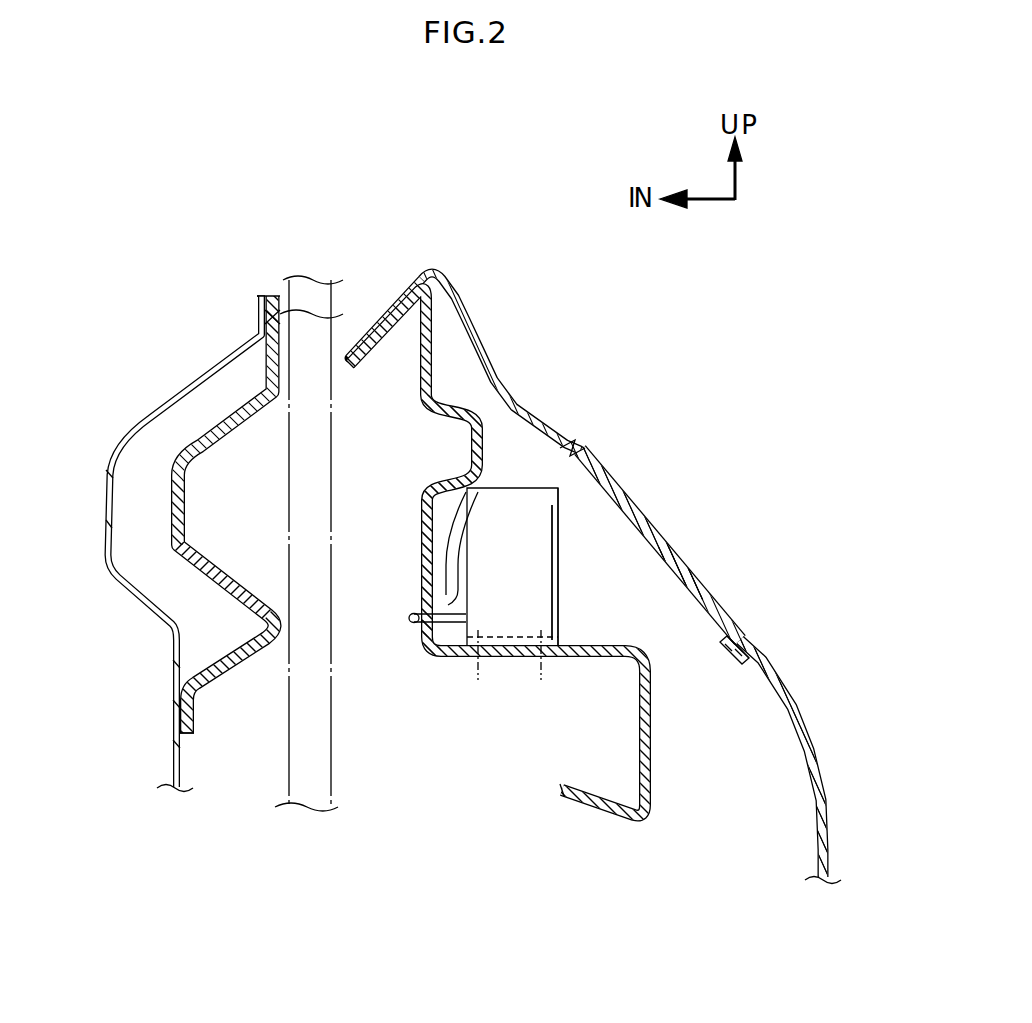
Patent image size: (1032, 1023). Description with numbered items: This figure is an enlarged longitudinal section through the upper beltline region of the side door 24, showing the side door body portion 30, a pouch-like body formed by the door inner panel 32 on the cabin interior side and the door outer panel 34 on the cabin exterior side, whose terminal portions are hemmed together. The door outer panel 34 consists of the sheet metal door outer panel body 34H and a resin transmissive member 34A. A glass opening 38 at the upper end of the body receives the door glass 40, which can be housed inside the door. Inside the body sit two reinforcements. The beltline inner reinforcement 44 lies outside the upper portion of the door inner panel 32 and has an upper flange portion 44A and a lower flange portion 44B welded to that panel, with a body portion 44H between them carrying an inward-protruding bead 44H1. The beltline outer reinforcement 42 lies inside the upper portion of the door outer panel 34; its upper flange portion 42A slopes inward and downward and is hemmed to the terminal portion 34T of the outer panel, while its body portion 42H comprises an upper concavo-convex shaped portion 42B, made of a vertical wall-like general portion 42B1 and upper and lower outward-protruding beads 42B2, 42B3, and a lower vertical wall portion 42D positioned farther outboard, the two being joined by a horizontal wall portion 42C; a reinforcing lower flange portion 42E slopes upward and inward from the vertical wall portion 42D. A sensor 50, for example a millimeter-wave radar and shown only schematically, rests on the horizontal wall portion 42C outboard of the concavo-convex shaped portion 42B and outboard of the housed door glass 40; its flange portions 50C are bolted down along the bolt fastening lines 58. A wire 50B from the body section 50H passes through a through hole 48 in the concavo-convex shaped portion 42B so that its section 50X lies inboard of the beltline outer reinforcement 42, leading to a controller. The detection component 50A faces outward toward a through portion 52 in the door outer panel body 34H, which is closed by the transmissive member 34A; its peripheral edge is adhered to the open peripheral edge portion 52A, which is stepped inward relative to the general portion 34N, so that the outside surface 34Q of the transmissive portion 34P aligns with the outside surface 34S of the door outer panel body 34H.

The side door 24 is at (560, 127).
The side door body portion 30 is at (503, 223).
The door inner panel 32 is at (150, 416).
The door outer panel 34 is at (832, 730).
The transmissive member 34A is at (712, 573).
The door outer panel body 34H is at (799, 707).
The general portion 34N is at (768, 663).
The transmissive portion 34P is at (677, 580).
The vehicle width direction outside surface 34Q is at (674, 547).
The vehicle width direction outside surface 34S is at (767, 657).
The terminal portion 34T is at (360, 367).
The glass opening 38 is at (283, 298).
The door glass 40 is at (280, 477).
The beltline outer reinforcement 42 is at (683, 783).
The upper flange portion 42A is at (380, 348).
The concavo-convex shaped portion 42B is at (407, 491).
The general portion 42B1 is at (421, 528).
The bead 42B2 is at (486, 445).
The bead 42B3 is at (467, 580).
The horizontal wall portion 42C is at (527, 663).
The vertical wall portion 42D is at (653, 731).
The lower flange portion 42E is at (597, 815).
The body portion 42H is at (410, 661).
The beltline inner reinforcement 44 is at (237, 692).
The upper flange portion 44A is at (333, 315).
The lower flange portion 44B is at (194, 712).
The body portion 44H is at (272, 651).
The bead 44H1 is at (172, 497).
The through hole 48 is at (437, 662).
The sensor 50 is at (517, 486).
The detection component 50A is at (560, 583).
The wire 50B is at (433, 590).
The flange portions 50C is at (503, 630).
The body section 50H is at (440, 487).
The section of the wire 50X is at (418, 617).
The through portion 52 is at (717, 634).
The open peripheral edge portion 52A is at (745, 635).
The long dashed short dashed lines 58 is at (550, 680).